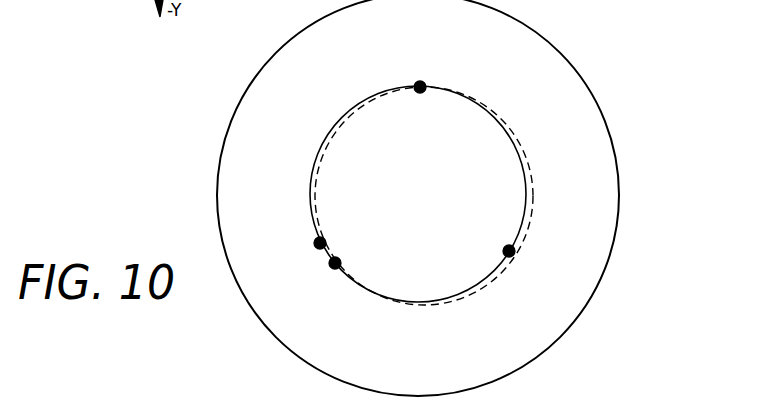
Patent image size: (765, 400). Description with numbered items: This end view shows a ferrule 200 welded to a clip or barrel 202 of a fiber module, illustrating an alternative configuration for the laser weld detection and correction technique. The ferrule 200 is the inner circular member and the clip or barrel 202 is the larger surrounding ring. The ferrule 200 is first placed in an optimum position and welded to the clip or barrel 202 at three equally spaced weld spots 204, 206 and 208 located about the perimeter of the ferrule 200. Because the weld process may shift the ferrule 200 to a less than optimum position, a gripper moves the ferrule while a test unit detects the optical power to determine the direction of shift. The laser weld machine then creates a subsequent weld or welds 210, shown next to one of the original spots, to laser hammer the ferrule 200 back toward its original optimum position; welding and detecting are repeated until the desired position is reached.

The ferrule 200 is at (510, 133).
The clip or barrel 202 is at (611, 194).
The weld spot 204 is at (420, 87).
The weld spot 206 is at (509, 251).
The weld spot 208 is at (320, 243).
The subsequent weld 210 is at (335, 263).